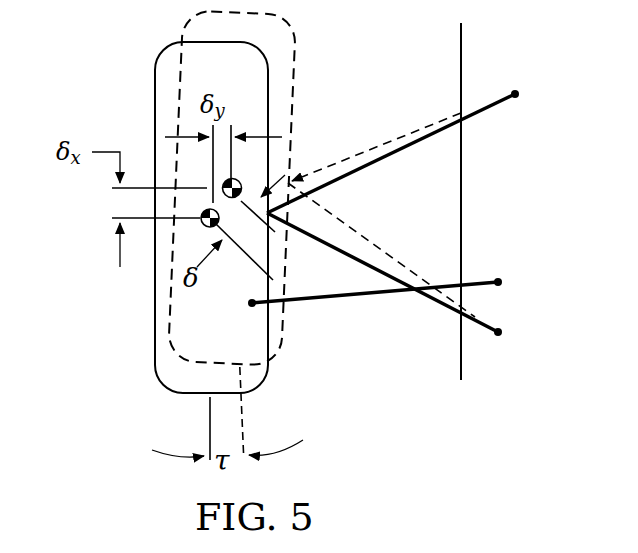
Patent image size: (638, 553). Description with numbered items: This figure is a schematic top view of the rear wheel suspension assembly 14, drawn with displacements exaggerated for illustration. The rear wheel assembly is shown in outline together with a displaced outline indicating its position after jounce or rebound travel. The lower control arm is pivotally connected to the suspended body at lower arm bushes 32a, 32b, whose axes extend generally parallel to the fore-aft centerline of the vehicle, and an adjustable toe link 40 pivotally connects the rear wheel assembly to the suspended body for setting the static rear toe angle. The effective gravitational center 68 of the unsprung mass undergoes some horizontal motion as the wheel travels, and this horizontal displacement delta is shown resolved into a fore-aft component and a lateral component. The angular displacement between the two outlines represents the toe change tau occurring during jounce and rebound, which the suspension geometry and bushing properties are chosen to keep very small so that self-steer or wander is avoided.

The rear wheel suspension assembly 14 is at (118, 62).
The lower arm bush 32a is at (498, 332).
The lower arm bush 32b is at (515, 93).
The adjustable toe link 40 is at (342, 299).
The effective gravitational center 68 is at (204, 222).